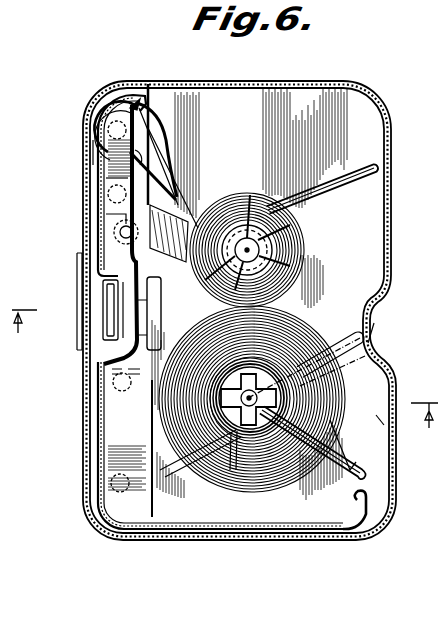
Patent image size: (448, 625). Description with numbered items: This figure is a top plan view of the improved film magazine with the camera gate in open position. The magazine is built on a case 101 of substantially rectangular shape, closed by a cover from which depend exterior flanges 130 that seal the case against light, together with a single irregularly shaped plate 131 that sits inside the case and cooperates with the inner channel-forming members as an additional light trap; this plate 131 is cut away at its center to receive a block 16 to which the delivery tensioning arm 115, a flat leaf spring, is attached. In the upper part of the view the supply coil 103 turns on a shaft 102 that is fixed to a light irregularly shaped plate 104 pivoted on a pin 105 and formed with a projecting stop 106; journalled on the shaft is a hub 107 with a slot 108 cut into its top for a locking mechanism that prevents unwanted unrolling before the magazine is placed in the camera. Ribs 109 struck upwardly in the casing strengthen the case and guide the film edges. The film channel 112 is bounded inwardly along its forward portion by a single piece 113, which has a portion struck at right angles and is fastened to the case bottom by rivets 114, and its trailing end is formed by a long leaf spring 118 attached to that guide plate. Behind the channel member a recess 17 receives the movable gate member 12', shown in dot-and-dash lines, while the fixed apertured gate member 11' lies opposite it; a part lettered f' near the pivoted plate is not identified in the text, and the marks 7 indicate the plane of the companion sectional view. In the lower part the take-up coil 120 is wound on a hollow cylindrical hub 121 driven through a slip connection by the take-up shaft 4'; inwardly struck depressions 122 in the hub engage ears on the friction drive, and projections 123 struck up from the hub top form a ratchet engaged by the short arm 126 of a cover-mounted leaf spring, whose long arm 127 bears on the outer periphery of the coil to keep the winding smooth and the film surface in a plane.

The exterior flanges 130 is at (391, 116).
The irregularly shaped plate 131 is at (105, 100).
The rivets 114 is at (98, 114).
The film channel 112 is at (92, 147).
The channel forming member 113 is at (106, 177).
The projecting stop 106 is at (108, 193).
The delivery tensioning arm 115 is at (106, 216).
The pin 105 is at (118, 233).
The irregularly shaped plate 104 is at (130, 248).
The contact strip 17 is at (97, 277).
The fixed apertured gate member 11' is at (79, 310).
The movable gate member 12' is at (81, 319).
The section line 7 is at (225, 361).
The contact member 16 is at (152, 307).
The spring f' is at (171, 156).
The supply roll 103 is at (303, 221).
The shaft 102 is at (302, 267).
The hub 107 is at (262, 232).
The slot 108 is at (257, 202).
The ribs 109 is at (376, 182).
The ratchet projections 123 is at (286, 387).
The take-up hub 121 is at (254, 440).
The inwardly struck depressions 122 is at (213, 457).
The take-up shaft 4' is at (309, 364).
The short arm 126 is at (292, 478).
The take-up roll 120 is at (234, 472).
The long leaf spring 118 is at (332, 538).
The long arm 127 is at (374, 323).
The case 101 is at (377, 417).